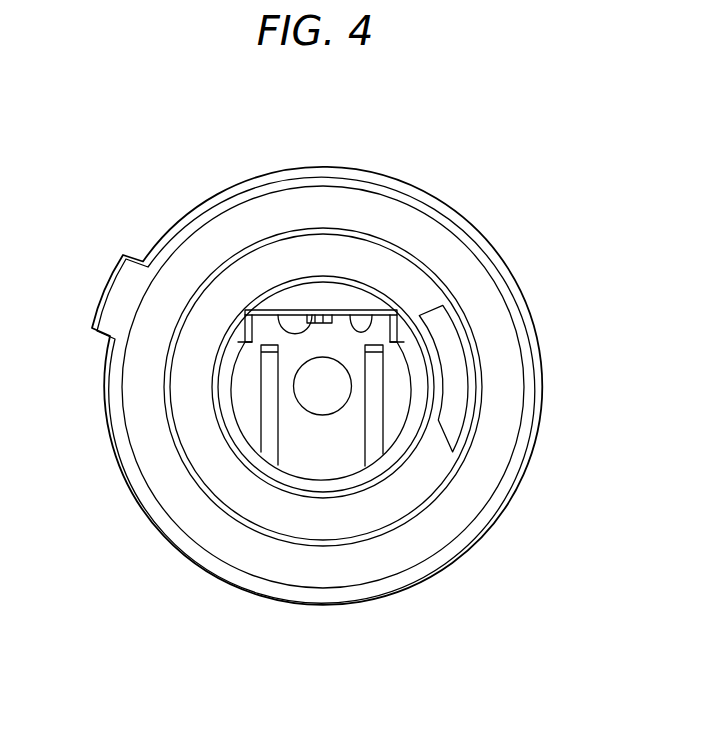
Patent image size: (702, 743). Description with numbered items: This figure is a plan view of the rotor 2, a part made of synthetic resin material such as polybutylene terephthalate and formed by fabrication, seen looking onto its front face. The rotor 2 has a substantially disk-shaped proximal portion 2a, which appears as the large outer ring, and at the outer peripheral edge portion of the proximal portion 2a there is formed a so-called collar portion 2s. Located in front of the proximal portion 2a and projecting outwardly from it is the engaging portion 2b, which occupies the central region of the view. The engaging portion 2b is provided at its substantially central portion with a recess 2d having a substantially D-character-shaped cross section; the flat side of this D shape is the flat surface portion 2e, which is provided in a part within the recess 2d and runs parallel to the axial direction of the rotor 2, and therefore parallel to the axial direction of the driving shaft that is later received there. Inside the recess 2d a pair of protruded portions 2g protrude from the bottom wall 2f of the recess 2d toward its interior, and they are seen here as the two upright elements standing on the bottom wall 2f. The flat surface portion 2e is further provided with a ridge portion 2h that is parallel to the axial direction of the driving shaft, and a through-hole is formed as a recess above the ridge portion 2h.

The rotor 2 is at (212, 183).
The proximal portion 2a is at (507, 263).
The engaging portion 2b is at (240, 463).
The recess 2d is at (335, 450).
The flat surface portion 2e is at (370, 312).
The bottom wall 2f is at (302, 443).
The protruded portions 2g is at (384, 390).
The ridge portion 2h is at (278, 312).
The collar portion 2s is at (437, 527).